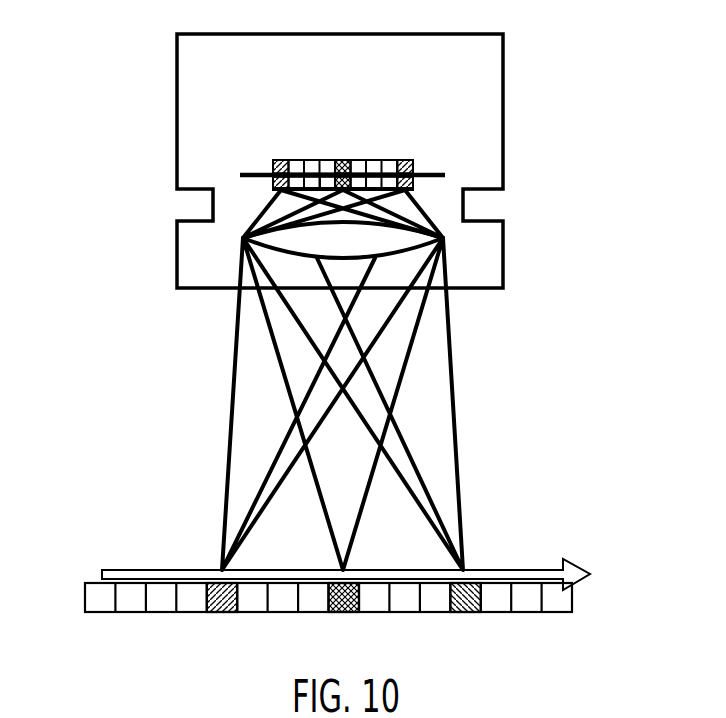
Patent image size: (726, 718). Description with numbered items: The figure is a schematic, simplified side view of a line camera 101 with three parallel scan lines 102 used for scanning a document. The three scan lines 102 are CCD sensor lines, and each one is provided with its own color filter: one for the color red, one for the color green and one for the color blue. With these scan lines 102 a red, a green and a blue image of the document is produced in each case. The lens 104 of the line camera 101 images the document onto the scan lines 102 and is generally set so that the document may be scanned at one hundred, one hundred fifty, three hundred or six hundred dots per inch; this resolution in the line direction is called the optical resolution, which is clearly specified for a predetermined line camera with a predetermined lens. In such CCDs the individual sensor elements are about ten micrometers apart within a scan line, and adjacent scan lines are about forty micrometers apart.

The line camera 101 is at (543, 60).
The scan lines 102 is at (275, 160).
The lens 104 is at (395, 260).